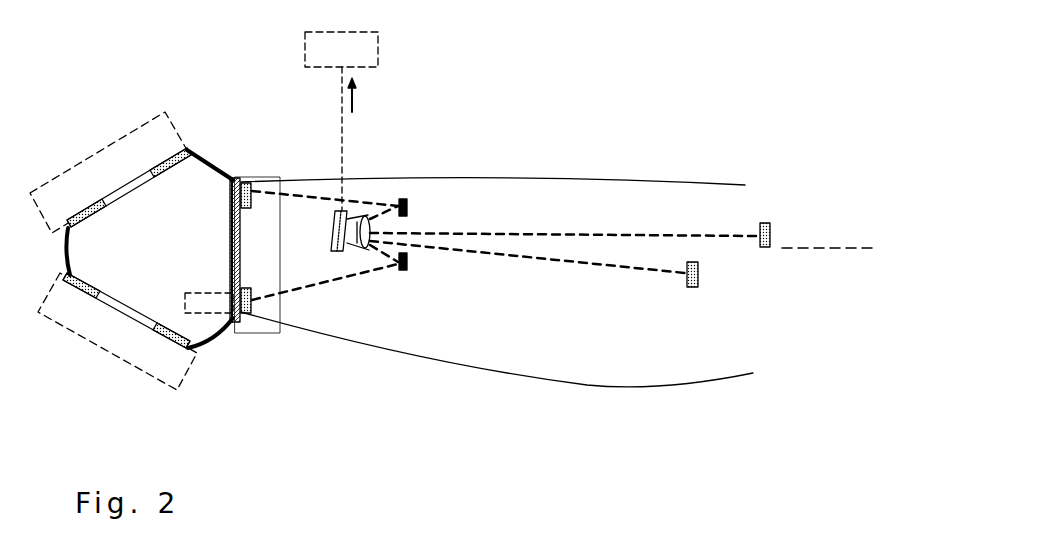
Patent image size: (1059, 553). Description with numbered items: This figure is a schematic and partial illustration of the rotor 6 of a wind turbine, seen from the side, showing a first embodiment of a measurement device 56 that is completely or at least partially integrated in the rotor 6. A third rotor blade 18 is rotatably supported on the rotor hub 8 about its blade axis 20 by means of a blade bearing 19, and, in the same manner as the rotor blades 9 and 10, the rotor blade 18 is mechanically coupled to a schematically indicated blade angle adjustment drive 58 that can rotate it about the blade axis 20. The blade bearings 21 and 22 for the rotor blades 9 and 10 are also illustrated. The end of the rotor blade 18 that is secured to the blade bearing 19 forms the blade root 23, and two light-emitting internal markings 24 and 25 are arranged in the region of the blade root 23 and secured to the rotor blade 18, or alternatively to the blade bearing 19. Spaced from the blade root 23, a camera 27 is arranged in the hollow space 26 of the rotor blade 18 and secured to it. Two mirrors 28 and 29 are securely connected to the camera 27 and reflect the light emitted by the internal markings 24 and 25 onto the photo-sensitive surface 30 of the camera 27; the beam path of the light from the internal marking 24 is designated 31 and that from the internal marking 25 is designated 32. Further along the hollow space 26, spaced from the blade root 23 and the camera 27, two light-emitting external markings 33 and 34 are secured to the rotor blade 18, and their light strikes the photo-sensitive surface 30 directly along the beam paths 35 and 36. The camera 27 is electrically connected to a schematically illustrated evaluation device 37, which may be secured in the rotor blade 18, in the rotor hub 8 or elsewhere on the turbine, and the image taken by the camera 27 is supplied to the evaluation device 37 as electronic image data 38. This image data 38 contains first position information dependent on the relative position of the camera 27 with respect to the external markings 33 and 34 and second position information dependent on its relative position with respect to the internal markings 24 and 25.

The rotor 6 is at (208, 350).
The rotor hub 8 is at (210, 160).
The rotor blade 9 is at (57, 177).
The rotor blade 10 is at (72, 333).
The third rotor blade 18 is at (653, 387).
The blade bearing 19 is at (230, 212).
The blade axis 20 is at (835, 250).
The blade bearing 21 is at (152, 177).
The blade bearing 22 is at (157, 330).
The blade root 23 is at (266, 323).
The internal marking 24 is at (240, 180).
The internal marking 25 is at (247, 313).
The hollow space 26 is at (572, 365).
The camera 27 is at (338, 252).
The mirror 28 is at (407, 203).
The mirror 29 is at (407, 266).
The photo-sensitive surface 30 is at (335, 232).
The beam path 31 is at (292, 177).
The beam path 32 is at (333, 284).
The external marking 33 is at (766, 223).
The external marking 34 is at (693, 288).
The beam path 35 is at (697, 236).
The beam path 36 is at (637, 273).
The evaluation device 37 is at (378, 38).
The image data 38 is at (353, 100).
The measurement device 56 is at (470, 108).
The blade angle adjustment drive 58 is at (200, 293).